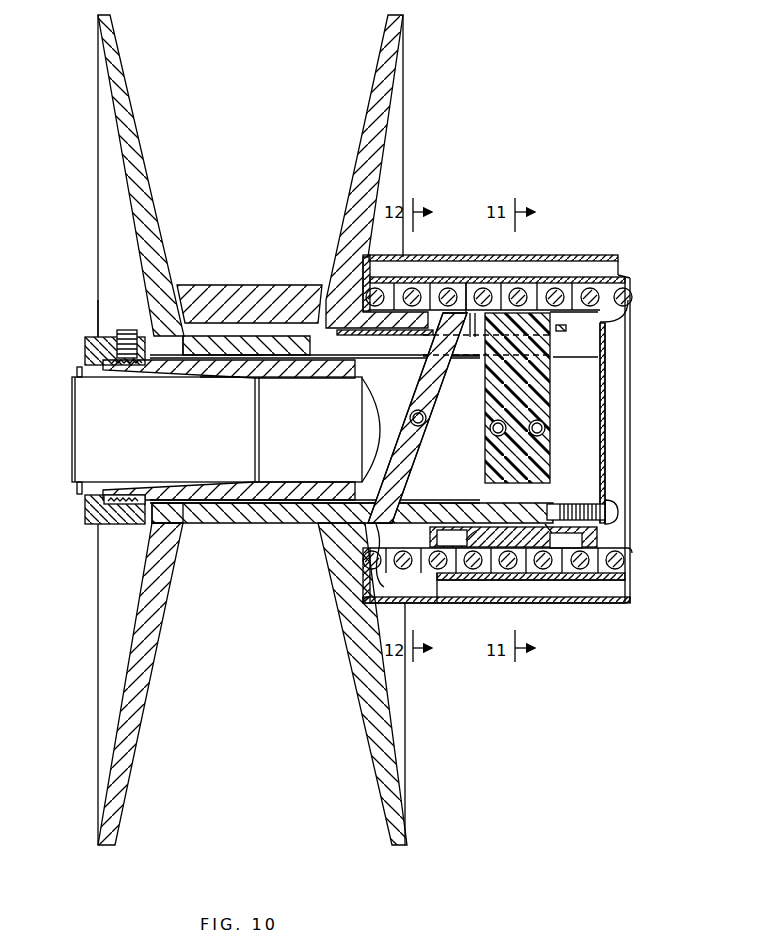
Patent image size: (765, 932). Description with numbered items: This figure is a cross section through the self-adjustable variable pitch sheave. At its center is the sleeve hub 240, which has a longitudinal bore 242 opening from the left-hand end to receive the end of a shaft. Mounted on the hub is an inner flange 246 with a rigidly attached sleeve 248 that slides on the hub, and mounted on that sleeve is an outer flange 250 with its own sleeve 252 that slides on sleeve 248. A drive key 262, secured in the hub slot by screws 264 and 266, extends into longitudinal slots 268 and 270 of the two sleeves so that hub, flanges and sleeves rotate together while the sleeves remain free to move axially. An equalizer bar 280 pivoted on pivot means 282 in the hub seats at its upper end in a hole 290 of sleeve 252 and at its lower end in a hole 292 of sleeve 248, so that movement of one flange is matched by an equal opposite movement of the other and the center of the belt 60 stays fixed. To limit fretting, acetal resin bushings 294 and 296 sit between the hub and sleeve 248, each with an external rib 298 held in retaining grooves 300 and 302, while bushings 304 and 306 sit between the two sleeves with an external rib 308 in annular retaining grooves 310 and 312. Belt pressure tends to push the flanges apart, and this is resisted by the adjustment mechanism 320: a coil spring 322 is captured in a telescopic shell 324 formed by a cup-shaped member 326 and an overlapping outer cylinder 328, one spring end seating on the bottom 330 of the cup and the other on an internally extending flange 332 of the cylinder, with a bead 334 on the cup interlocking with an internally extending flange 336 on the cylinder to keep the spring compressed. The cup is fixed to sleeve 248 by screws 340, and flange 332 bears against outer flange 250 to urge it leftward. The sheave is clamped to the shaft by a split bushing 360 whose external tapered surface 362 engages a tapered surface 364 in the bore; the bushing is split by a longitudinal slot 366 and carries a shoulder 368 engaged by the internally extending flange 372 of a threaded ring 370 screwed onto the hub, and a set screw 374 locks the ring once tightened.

The belt 60 is at (254, 294).
The sleeve hub 240 is at (316, 505).
The longitudinal bore 242 is at (270, 495).
The inner flange 246 is at (150, 189).
The sleeve 248 is at (222, 525).
The outer flange 250 is at (356, 166).
The sleeve 252 is at (423, 337).
The drive key 262 is at (550, 401).
The screw 264 is at (490, 433).
The screw 266 is at (546, 432).
The longitudinal slot 268 is at (558, 358).
The longitudinal slot 270 is at (513, 298).
The equalizer bar 280 is at (421, 384).
The pivot means 282 is at (427, 418).
The hole 290 is at (466, 312).
The hole 292 is at (396, 560).
The bushing 294 is at (216, 385).
The bushing 296 is at (475, 362).
The external rib 298 is at (182, 336).
The retaining groove 300 is at (160, 347).
The retaining groove 302 is at (553, 345).
The bushing 304 is at (352, 347).
The bushing 306 is at (513, 537).
The external rib 308 is at (561, 327).
The annular retaining groove 310 is at (340, 332).
The annular retaining groove 312 is at (564, 537).
The adjustment mechanism 320 is at (604, 253).
The coil spring 322 is at (382, 292).
The telescopic shell 324 is at (530, 255).
The cup-shaped member 326 is at (630, 583).
The outer cylinder 328 is at (585, 603).
The bottom 330 is at (629, 556).
The internally extending flange 332 is at (364, 258).
The bead 334 is at (452, 592).
The internally extending flange 336 is at (622, 596).
The screw 340 is at (620, 513).
The split bushing 360 is at (243, 434).
The external tapered surface 362 is at (257, 396).
The tapered surface 364 is at (235, 360).
The longitudinal slot 366 is at (130, 381).
The shoulder 368 is at (106, 487).
The threaded ring 370 is at (96, 342).
The internally extending flange 372 is at (96, 505).
The set screw 374 is at (114, 333).